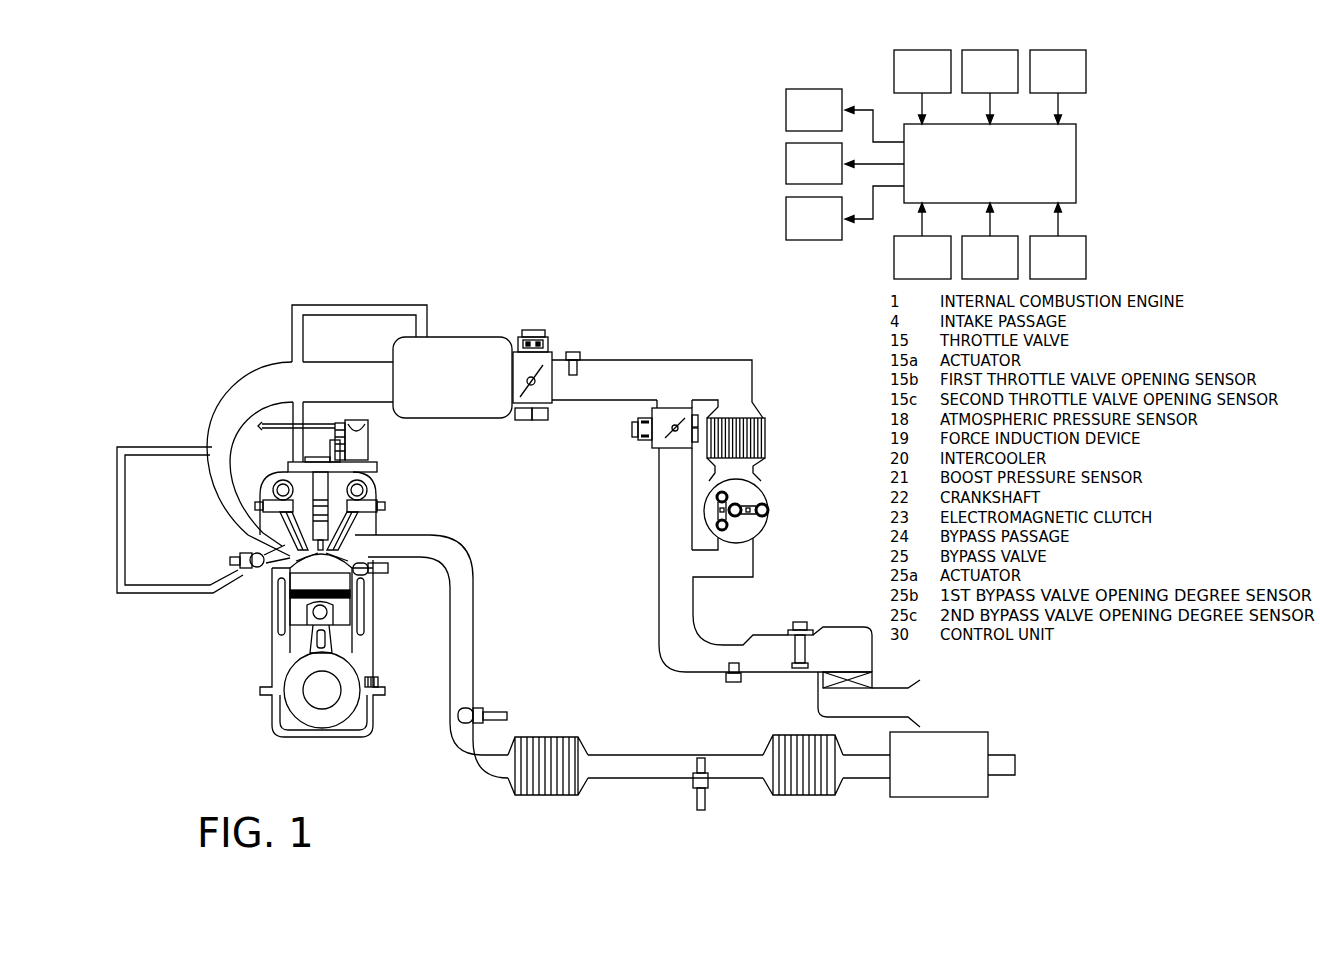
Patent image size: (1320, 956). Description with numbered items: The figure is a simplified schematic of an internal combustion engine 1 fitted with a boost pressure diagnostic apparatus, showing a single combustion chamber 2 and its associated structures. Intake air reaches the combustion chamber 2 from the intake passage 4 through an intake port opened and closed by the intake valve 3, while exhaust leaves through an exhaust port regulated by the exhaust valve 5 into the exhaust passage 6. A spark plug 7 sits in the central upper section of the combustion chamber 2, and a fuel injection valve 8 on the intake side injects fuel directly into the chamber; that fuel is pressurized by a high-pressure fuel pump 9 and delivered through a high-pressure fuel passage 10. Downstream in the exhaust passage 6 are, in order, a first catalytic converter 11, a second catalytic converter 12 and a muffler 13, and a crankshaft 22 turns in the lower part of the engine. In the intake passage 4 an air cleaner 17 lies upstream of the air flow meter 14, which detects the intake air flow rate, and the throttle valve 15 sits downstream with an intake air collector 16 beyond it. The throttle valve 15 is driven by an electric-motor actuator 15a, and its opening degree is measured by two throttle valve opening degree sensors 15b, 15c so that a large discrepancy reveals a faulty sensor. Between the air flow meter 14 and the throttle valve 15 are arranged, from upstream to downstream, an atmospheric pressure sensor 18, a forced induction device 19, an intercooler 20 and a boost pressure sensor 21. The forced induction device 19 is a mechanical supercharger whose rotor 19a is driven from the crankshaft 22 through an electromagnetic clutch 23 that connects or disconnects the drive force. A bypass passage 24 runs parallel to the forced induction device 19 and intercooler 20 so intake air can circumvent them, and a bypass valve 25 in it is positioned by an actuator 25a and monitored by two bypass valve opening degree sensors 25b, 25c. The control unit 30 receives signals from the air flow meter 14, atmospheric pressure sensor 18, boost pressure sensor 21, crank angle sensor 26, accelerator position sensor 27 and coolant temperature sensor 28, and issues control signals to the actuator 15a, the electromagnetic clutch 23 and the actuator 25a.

The internal combustion engine 1 is at (209, 668).
The combustion chamber 2 is at (340, 580).
The intake valve 3 is at (252, 534).
The intake passage 4 is at (229, 361).
The exhaust valve 5 is at (320, 557).
The exhaust passage 6 is at (453, 763).
The spark plug 7 is at (333, 563).
The fuel injection valve 8 is at (265, 572).
The high-pressure fuel pump 9 is at (368, 450).
The high-pressure fuel passage 10 is at (125, 503).
The first catalytic converter 11 is at (540, 790).
The second catalytic converter 12 is at (795, 792).
The muffler 13 is at (960, 788).
The air flow meter 14 is at (803, 622).
The throttle valve 15 is at (534, 322).
The actuator 15a is at (552, 343).
The first throttle valve opening degree sensor 15b is at (523, 420).
The second throttle valve opening degree sensor 15c is at (538, 420).
The intake air collector 16 is at (470, 337).
The air cleaner 17 is at (873, 680).
The atmospheric pressure sensor 18 is at (731, 684).
The forced induction device 19 is at (776, 505).
The rotor 19a is at (729, 523).
The intercooler 20 is at (766, 436).
The boost pressure sensor 21 is at (580, 356).
The crankshaft 22 is at (320, 698).
The electromagnetic clutch 23 is at (814, 163).
The bypass passage 24 is at (660, 527).
The bypass valve 25 is at (623, 433).
The actuator 25a is at (640, 443).
The first bypass valve opening degree sensor 25b is at (698, 412).
The second bypass valve opening degree sensor 25c is at (695, 445).
The crank angle sensor 26 is at (380, 681).
The accelerator position sensor 27 is at (990, 257).
The coolant temperature sensor 28 is at (390, 569).
The control unit 30 is at (1073, 160).